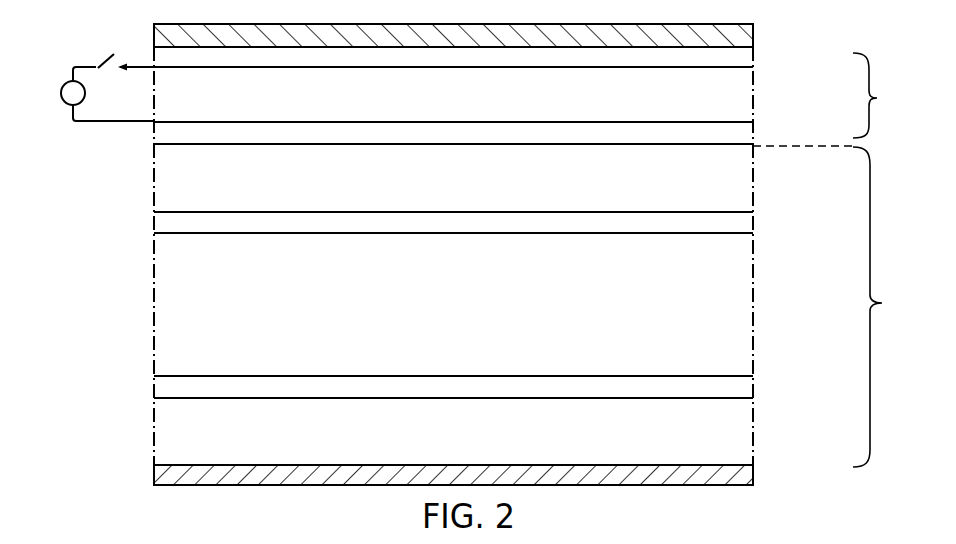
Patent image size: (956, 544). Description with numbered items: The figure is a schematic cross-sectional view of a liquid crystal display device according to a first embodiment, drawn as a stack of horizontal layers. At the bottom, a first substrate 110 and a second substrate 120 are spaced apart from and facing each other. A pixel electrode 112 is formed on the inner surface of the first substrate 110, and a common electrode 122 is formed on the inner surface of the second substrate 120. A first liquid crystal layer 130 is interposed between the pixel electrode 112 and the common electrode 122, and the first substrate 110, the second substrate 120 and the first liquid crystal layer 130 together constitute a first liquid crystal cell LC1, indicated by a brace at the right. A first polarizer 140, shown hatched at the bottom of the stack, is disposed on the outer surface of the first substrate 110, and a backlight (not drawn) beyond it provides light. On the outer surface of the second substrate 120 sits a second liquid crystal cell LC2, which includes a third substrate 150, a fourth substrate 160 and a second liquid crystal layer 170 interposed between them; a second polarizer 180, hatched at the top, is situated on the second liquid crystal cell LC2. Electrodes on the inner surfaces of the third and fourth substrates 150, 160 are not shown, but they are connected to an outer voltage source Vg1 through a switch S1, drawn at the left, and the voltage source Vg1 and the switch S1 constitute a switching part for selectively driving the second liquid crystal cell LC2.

The second polarizer 180 is at (753, 42).
The fourth substrate 160 is at (747, 60).
The second liquid crystal layer 170 is at (747, 100).
The third substrate 150 is at (747, 135).
The second substrate 120 is at (468, 190).
The common electrode 122 is at (747, 227).
The first liquid crystal layer 130 is at (747, 287).
The pixel electrode 112 is at (747, 388).
The first substrate 110 is at (472, 438).
The first polarizer 140 is at (750, 478).
The voltage source Vg1 is at (91, 94).
The switch S1 is at (105, 48).
The first liquid crystal cell LC1 is at (835, 306).
The second liquid crystal cell LC2 is at (886, 95).